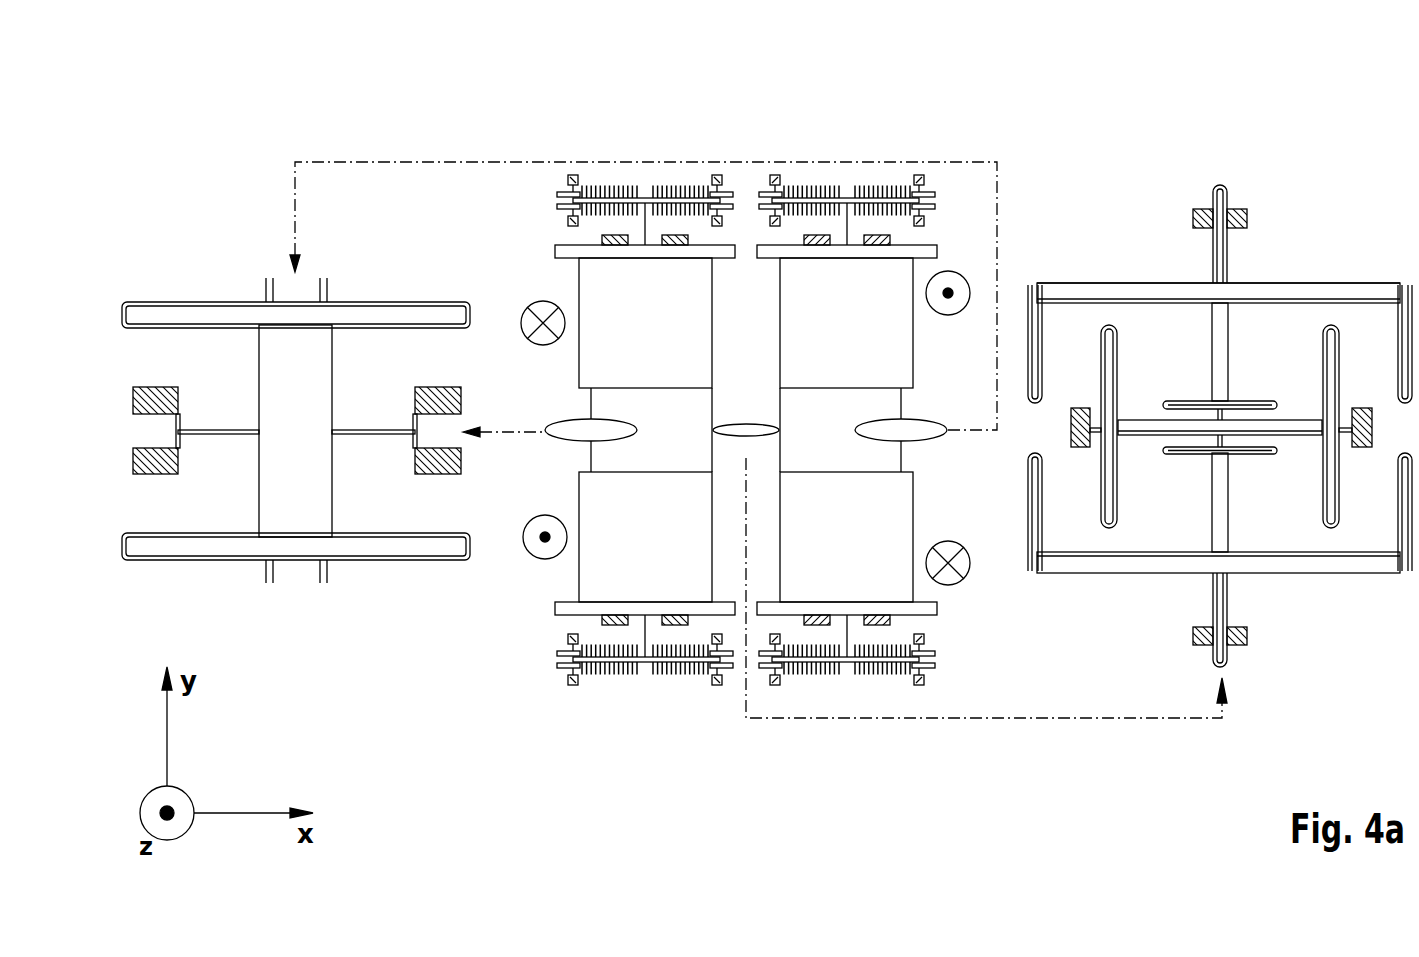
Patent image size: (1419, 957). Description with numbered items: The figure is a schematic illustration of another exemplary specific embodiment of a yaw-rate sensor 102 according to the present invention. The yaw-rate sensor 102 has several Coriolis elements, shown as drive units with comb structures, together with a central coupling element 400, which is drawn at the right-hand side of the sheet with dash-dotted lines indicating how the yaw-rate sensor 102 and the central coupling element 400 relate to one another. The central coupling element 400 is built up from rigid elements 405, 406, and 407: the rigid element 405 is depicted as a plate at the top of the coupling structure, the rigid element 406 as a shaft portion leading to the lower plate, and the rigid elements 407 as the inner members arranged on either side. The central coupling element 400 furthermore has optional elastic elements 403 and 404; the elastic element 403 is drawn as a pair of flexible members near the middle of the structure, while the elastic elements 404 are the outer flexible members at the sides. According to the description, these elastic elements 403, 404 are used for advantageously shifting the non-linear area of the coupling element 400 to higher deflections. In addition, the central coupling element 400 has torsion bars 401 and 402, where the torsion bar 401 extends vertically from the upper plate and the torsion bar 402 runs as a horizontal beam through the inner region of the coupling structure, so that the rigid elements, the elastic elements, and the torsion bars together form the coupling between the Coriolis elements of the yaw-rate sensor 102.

The yaw-rate sensor 102 is at (538, 145).
The central coupling element 400 is at (1220, 367).
The torsion bar 401 is at (1224, 247).
The torsion bar 402 is at (1220, 415).
The elastic element 403 is at (1183, 400).
The elastic element 404 is at (1397, 325).
The rigid element 405 is at (1108, 283).
The rigid element 406 is at (1212, 533).
The rigid element 407 is at (1138, 418).